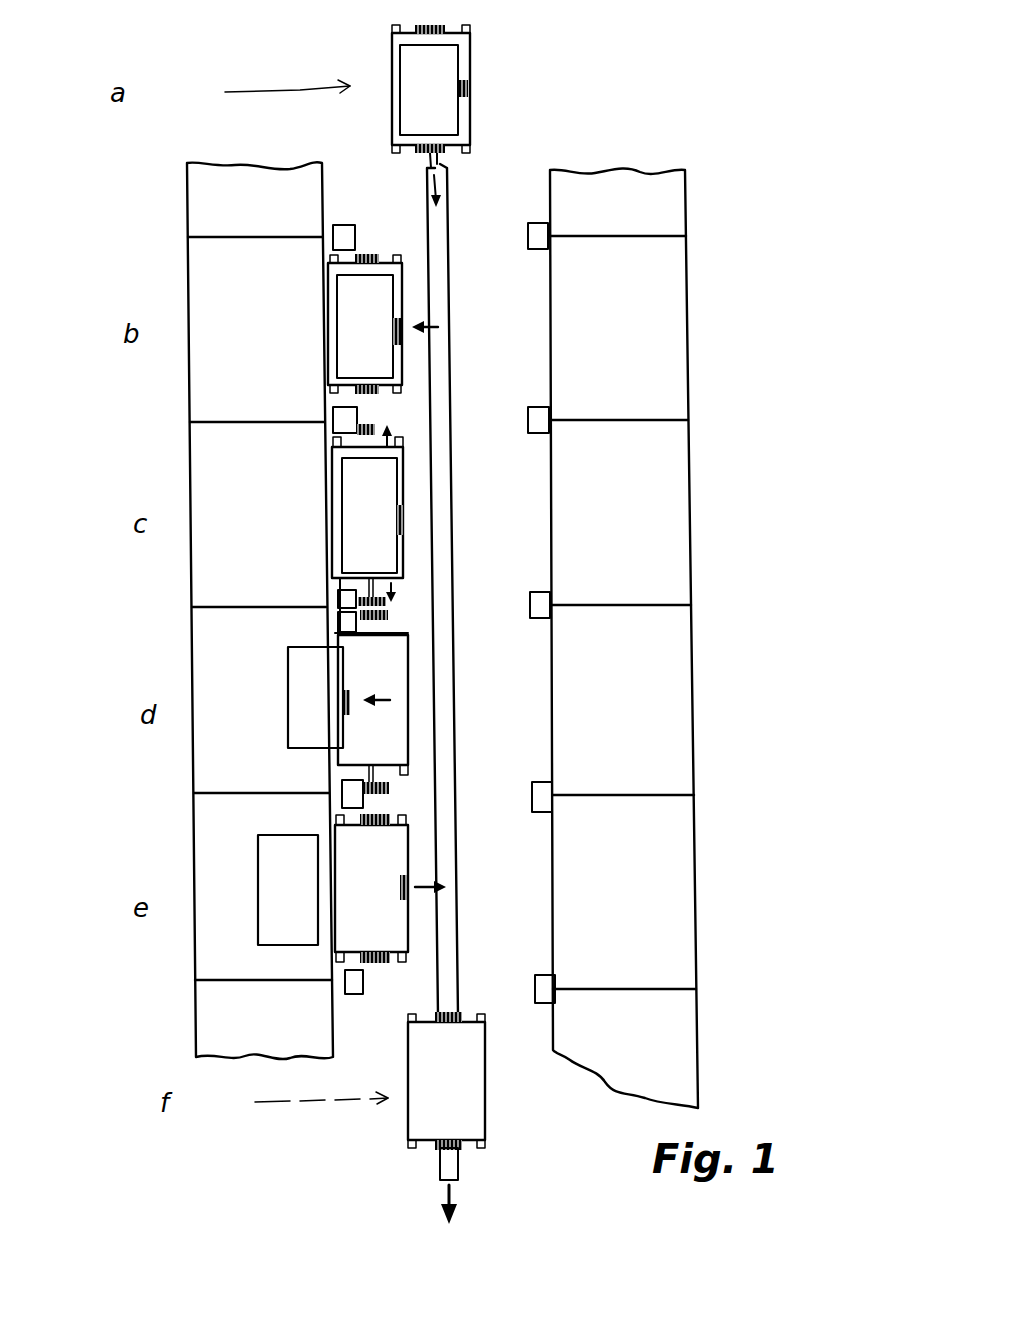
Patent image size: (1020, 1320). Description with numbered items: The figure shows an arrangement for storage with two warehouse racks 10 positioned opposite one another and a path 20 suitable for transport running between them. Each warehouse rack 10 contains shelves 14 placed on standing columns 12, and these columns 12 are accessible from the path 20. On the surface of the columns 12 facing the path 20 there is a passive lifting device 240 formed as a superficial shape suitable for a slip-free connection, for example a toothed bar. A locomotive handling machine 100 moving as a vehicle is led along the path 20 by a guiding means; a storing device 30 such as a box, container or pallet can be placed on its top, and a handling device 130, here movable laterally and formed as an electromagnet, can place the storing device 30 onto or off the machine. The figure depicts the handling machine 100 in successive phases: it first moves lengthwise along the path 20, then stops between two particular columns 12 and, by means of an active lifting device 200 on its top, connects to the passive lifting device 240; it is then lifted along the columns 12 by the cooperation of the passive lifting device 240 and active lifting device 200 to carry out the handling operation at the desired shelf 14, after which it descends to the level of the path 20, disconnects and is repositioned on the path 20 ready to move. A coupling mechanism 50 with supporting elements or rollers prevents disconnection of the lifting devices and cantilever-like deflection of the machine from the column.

The warehouse rack 10 is at (137, 428).
The column 12 is at (350, 225).
The shelf 14 is at (250, 538).
The path 20 is at (447, 490).
The storing device 30 is at (455, 70).
The coupling mechanism 50 is at (350, 303).
The handling machine 100 is at (478, 118).
The handling device 130 is at (348, 703).
The active lifting device 200 is at (375, 390).
The passive lifting device 240 is at (362, 236).